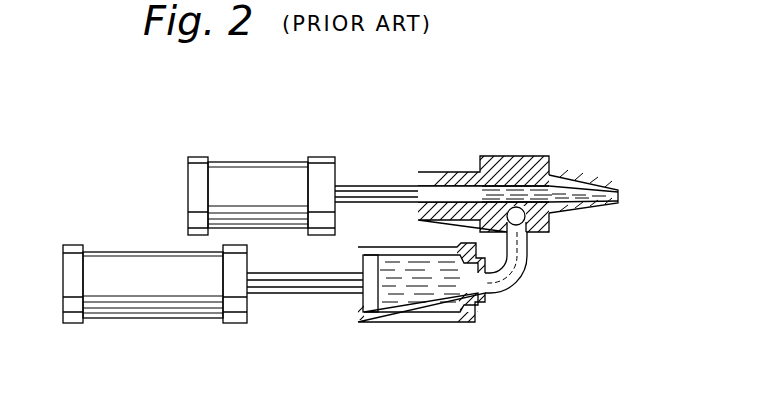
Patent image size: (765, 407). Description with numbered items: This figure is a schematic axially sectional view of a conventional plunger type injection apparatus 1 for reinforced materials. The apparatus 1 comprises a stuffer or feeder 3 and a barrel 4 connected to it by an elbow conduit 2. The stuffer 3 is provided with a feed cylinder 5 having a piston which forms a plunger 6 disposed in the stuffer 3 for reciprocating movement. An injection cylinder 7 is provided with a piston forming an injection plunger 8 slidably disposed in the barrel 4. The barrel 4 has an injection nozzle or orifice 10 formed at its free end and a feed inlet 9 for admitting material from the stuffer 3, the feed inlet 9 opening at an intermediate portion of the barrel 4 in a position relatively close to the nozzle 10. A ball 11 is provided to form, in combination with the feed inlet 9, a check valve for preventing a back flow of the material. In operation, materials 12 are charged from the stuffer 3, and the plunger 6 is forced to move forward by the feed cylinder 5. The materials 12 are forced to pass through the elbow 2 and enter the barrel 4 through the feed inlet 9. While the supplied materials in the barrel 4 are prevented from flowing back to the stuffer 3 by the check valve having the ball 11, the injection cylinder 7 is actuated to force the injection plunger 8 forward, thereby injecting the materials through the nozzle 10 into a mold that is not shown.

The apparatus 1 is at (443, 130).
The elbow conduit 2 is at (518, 280).
The stuffer 3 is at (392, 318).
The barrel 4 is at (540, 163).
The feed cylinder 5 is at (167, 302).
The plunger 6 is at (360, 311).
The injection cylinder 7 is at (250, 178).
The injection plunger 8 is at (388, 184).
The feed inlet 9 is at (512, 183).
The injection nozzle 10 is at (607, 188).
The ball 11 is at (548, 222).
The materials 12 is at (438, 293).